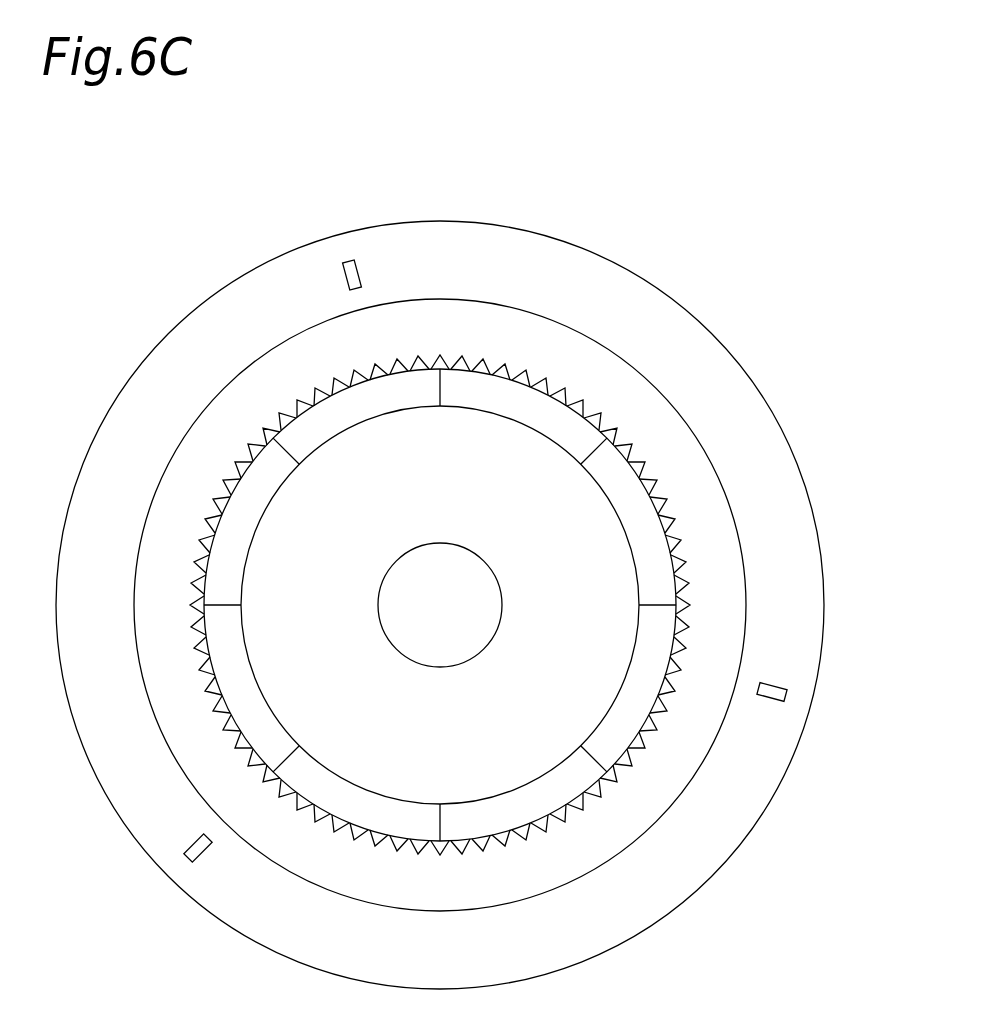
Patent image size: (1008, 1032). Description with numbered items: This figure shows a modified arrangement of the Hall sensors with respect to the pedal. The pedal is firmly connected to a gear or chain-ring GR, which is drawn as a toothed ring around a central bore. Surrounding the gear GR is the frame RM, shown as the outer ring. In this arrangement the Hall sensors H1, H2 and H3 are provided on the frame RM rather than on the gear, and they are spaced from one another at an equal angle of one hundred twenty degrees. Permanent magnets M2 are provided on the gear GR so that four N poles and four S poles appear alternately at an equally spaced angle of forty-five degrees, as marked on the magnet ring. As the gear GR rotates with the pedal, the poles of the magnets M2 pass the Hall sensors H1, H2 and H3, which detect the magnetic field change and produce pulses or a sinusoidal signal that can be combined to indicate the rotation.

The frame RM is at (697, 865).
The gear GR is at (504, 362).
The magnet M2 is at (314, 423).
The Hall sensor H1 is at (360, 268).
The Hall sensor H2 is at (776, 683).
The Hall sensor H3 is at (202, 858).